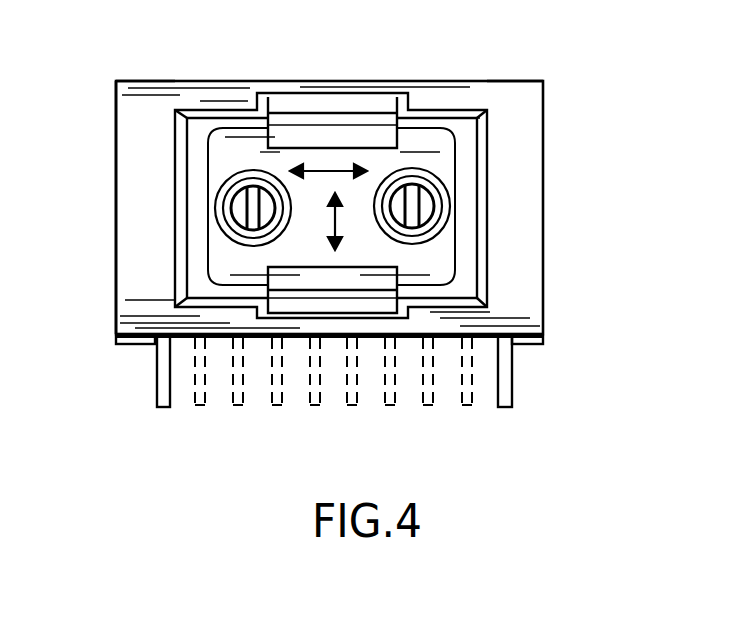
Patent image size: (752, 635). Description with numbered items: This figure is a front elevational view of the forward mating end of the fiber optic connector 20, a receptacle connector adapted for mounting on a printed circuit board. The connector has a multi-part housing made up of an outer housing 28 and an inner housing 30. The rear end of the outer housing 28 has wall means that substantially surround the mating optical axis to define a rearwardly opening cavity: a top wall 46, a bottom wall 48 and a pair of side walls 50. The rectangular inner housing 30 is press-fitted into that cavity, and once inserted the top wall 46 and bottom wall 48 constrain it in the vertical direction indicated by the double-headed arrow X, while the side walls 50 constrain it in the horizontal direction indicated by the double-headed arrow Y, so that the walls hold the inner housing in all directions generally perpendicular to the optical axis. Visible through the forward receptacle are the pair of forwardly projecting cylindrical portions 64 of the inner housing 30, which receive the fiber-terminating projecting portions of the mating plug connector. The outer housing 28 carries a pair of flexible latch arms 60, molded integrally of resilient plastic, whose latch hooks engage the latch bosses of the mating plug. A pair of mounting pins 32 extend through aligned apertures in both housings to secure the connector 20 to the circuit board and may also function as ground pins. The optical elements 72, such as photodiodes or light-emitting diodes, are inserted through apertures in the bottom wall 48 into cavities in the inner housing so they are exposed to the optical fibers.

The fiber optic connector 20 is at (556, 226).
The outer housing 28 is at (545, 79).
The inner housing 30 is at (322, 158).
The mounting pins 32 is at (155, 380).
The top wall 46 is at (358, 88).
The bottom wall 48 is at (348, 320).
The side walls 50 is at (130, 100).
The flexible latch arms 60 is at (282, 118).
The forwardly projecting cylindrical portions 64 is at (233, 190).
The optical elements 72 is at (423, 397).
The X direction X is at (333, 218).
The Y direction Y is at (332, 168).